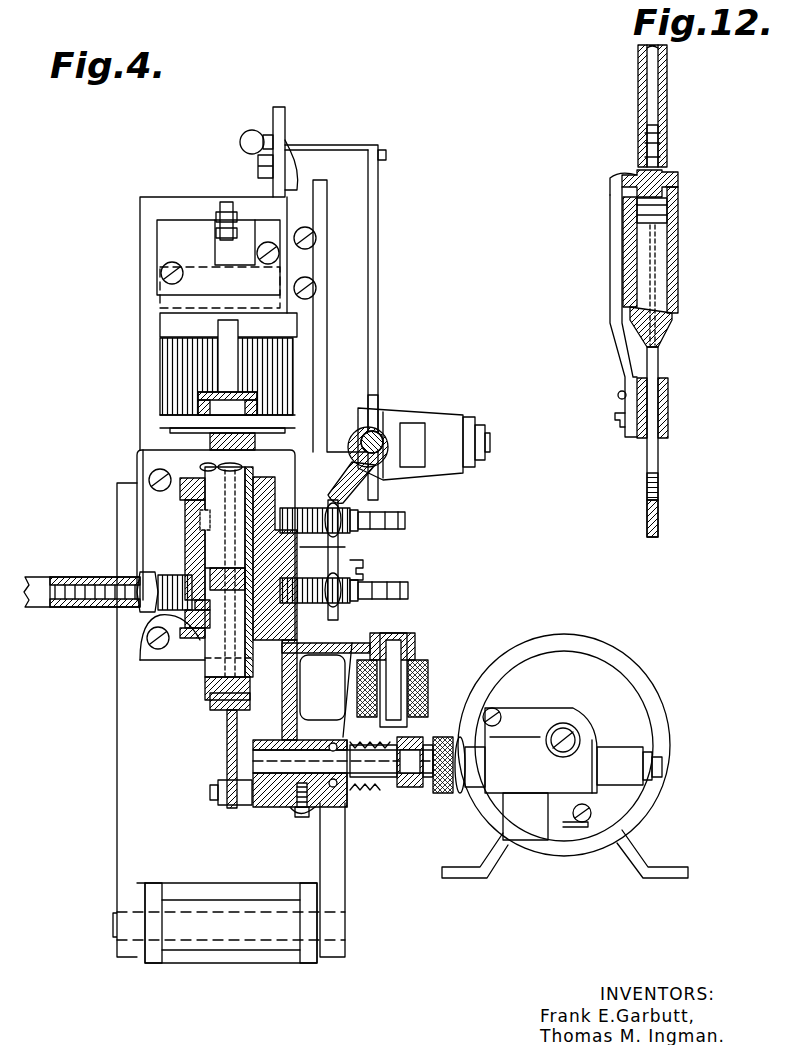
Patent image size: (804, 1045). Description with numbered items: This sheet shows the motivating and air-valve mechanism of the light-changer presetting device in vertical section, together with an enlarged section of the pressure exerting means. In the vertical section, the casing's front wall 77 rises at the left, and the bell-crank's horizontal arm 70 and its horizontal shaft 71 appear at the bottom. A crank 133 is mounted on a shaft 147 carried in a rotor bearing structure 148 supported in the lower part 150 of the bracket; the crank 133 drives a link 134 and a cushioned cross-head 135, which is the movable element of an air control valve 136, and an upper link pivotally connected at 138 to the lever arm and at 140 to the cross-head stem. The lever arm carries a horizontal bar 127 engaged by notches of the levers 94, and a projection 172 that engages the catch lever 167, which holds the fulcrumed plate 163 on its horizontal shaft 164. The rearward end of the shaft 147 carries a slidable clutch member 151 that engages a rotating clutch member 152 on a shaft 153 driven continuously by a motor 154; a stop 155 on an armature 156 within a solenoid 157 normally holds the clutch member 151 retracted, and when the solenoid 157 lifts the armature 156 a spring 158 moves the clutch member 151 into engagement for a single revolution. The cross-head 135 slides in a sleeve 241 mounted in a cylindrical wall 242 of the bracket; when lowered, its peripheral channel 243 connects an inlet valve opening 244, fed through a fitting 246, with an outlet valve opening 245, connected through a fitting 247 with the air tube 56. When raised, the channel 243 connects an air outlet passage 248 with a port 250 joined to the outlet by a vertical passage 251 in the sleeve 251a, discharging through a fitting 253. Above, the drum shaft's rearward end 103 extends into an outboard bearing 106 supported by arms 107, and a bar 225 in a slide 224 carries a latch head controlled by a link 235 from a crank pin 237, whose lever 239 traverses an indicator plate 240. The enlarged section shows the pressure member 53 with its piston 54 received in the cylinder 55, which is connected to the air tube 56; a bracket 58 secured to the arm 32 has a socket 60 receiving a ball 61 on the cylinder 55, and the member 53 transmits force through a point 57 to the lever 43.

In FIG. 4, the lever 239 is at (268, 135).
In FIG. 4, the indicator plate 240 is at (285, 125).
In FIG. 4, the crank pin 237 is at (386, 155).
In FIG. 4, the link 235 is at (378, 240).
In FIG. 4, the catch lever 167 is at (226, 222).
In FIG. 4, the horizontal shaft 164 is at (172, 274).
In FIG. 4, the fulcrumed plate 163 is at (178, 318).
In FIG. 4, the bracket or projection 172 is at (228, 350).
In FIG. 4, the lever 94 is at (195, 372).
In FIG. 4, the pivot connection 138 is at (205, 405).
In FIG. 4, the horizontal bar 127 is at (180, 430).
In FIG. 4, the pivot connection 140 is at (212, 442).
In FIG. 4, the port 250 is at (197, 517).
In FIG. 4, the air control valve 136 is at (195, 532).
In FIG. 4, the vertical passage 251 is at (198, 543).
In FIG. 4, the cylindrical wall 242 is at (200, 553).
In FIG. 4, the cushioned cross-head 135 is at (207, 560).
In FIG. 4, the air outlet passage 248 is at (275, 530).
In FIG. 4, the slide 224 is at (372, 430).
In FIG. 4, the bar 225 is at (378, 440).
In FIG. 4, the arms 107 is at (430, 412).
In FIG. 4, the rearward end of shaft 103 is at (445, 435).
In FIG. 4, the outboard bearing 106 is at (487, 443).
In FIG. 4, the fitting 253 is at (360, 515).
In FIG. 4, the sleeve or cylinder 251a is at (340, 552).
In FIG. 4, the fitting 246 is at (362, 585).
In FIG. 4, the air tube 56 is at (42, 605).
In FIG. 12, the air tube 56 is at (667, 100).
In FIG. 4, the fitting 247 is at (130, 600).
In FIG. 4, the outlet valve opening 245 is at (175, 612).
In FIG. 4, the sleeve or cylinder 241 is at (210, 590).
In FIG. 4, the peripheral channel 243 is at (215, 610).
In FIG. 4, the inlet valve opening 244 is at (280, 590).
In FIG. 4, the armature 156 is at (380, 665).
In FIG. 4, the solenoid 157 is at (420, 670).
In FIG. 4, the stop 155 is at (405, 700).
In FIG. 4, the motor 154 is at (598, 658).
In FIG. 4, the rotating clutch member 152 is at (412, 750).
In FIG. 4, the lower part of bracket 150 is at (305, 750).
In FIG. 4, the front wall 77 is at (117, 755).
In FIG. 4, the link 134 is at (227, 750).
In FIG. 4, the crank 133 is at (228, 805).
In FIG. 4, the shaft 147 is at (283, 805).
In FIG. 4, the spring 158 is at (360, 790).
In FIG. 4, the slidable clutch member 151 is at (385, 780).
In FIG. 4, the shaft 153 is at (445, 793).
In FIG. 4, the rotor bearing structure 148 is at (322, 805).
In FIG. 4, the horizontal arm 70 is at (203, 963).
In FIG. 4, the horizontal shaft 71 is at (243, 935).
In FIG. 12, the ball 61 is at (632, 178).
In FIG. 12, the socket 60 is at (668, 170).
In FIG. 12, the cylinder 55 is at (665, 212).
In FIG. 12, the piston 54 is at (678, 250).
In FIG. 12, the bracket 58 is at (610, 252).
In FIG. 12, the pressure member 53 is at (660, 363).
In FIG. 12, the arm 32 is at (668, 405).
In FIG. 12, the point 57 is at (658, 485).
In FIG. 12, the lever 43 is at (647, 520).